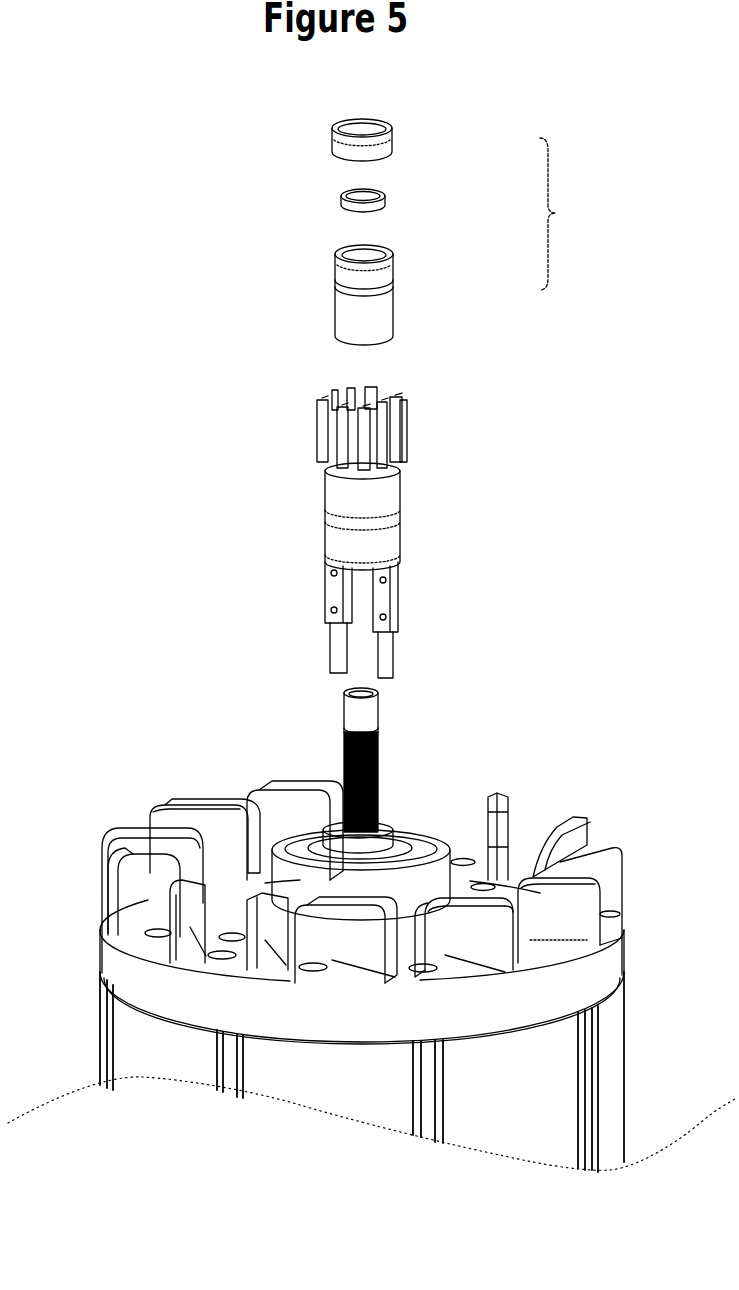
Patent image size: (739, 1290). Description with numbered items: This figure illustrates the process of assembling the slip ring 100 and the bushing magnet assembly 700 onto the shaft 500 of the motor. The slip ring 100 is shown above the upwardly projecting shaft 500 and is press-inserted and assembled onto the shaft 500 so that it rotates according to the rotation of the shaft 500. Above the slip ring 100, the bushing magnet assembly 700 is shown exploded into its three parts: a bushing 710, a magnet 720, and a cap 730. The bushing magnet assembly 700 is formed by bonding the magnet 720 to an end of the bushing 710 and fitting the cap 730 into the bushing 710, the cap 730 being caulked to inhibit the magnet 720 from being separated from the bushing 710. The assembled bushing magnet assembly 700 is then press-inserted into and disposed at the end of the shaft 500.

The slip ring 100 is at (429, 527).
The shaft 500 is at (380, 756).
The bushing magnet assembly 700 is at (570, 214).
The bushing 710 is at (404, 264).
The magnet 720 is at (404, 199).
The cap 730 is at (404, 140).